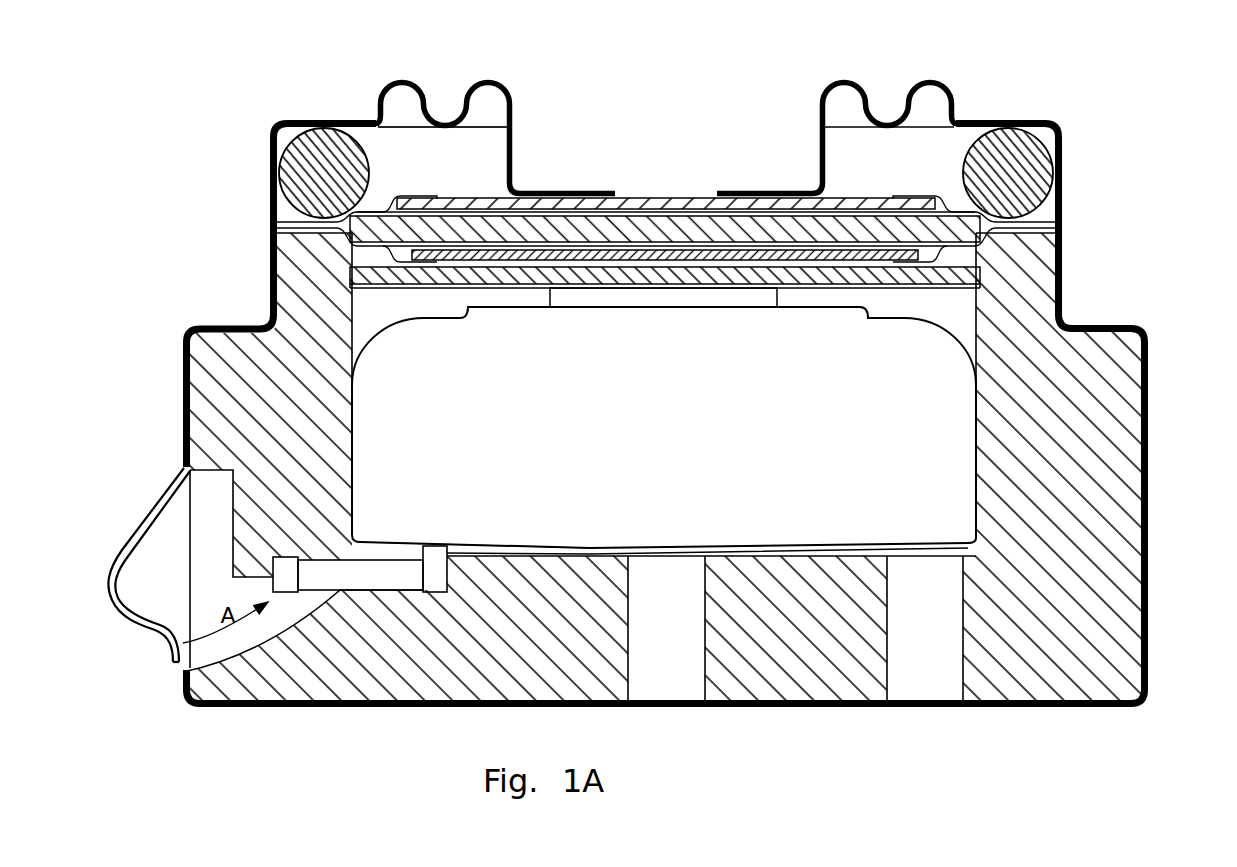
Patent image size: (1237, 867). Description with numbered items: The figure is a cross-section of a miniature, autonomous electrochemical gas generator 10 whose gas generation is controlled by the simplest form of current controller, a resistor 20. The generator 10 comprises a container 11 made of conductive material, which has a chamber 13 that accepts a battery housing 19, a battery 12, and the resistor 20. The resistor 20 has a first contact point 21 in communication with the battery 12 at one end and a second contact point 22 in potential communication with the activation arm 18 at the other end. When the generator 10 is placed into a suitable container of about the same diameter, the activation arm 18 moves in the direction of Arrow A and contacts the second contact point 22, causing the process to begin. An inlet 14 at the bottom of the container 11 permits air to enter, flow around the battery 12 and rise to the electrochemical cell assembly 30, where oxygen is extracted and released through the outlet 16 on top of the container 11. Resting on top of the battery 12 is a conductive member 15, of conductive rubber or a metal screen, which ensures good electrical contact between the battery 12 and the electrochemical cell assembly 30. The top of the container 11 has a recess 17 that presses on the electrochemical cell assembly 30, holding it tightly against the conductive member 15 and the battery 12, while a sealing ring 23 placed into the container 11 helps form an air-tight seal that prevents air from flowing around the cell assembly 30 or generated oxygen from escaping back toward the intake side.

The electrochemical gas generator 10 is at (225, 160).
The container 11 is at (1150, 484).
The battery 12 is at (657, 429).
The chamber 13 is at (957, 313).
The inlet 14 is at (670, 687).
The conductive member 15 is at (913, 288).
The outlet 16 is at (662, 195).
The recess 17 is at (537, 152).
The activation arm 18 is at (123, 552).
The battery housing 19 is at (1060, 580).
The resistor 20 is at (368, 572).
The first contact point 21 is at (435, 542).
The second contact point 22 is at (288, 557).
The sealing ring 23 is at (1010, 165).
The electrochemical cell assembly 30 is at (1060, 203).